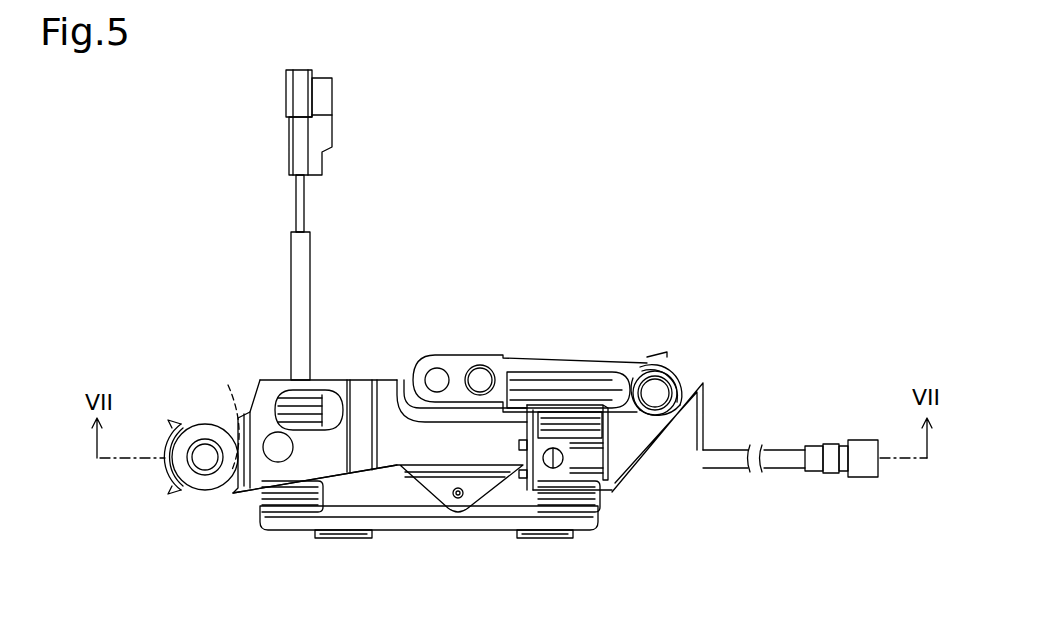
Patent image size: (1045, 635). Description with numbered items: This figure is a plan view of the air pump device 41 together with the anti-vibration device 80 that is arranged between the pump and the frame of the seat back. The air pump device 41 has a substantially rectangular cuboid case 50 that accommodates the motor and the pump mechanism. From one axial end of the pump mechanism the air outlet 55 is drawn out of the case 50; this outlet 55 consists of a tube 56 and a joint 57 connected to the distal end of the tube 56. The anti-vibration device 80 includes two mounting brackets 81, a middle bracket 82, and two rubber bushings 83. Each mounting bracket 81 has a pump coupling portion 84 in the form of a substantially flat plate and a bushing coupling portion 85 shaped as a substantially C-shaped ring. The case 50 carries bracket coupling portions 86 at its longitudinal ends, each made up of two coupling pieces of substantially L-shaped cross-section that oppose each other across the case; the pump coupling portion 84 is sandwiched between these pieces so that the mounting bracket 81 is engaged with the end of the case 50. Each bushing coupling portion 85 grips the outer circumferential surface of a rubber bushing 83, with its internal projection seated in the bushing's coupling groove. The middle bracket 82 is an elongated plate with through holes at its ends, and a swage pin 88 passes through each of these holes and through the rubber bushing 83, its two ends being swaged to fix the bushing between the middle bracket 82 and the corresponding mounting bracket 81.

The air pump device 41 is at (716, 578).
The case 50 is at (410, 531).
The air outlet 55 is at (791, 505).
The tube 56 is at (788, 470).
The joint 57 is at (841, 482).
The anti-vibration device 80 is at (781, 258).
The mounting bracket 81 is at (183, 420).
The middle bracket 82 is at (468, 354).
The rubber bushing 83 is at (700, 343).
The pump coupling portion 84 is at (543, 456).
The bushing coupling portion 85 is at (700, 386).
The bracket coupling portion 86 is at (308, 415).
The swage pin 88 is at (195, 457).